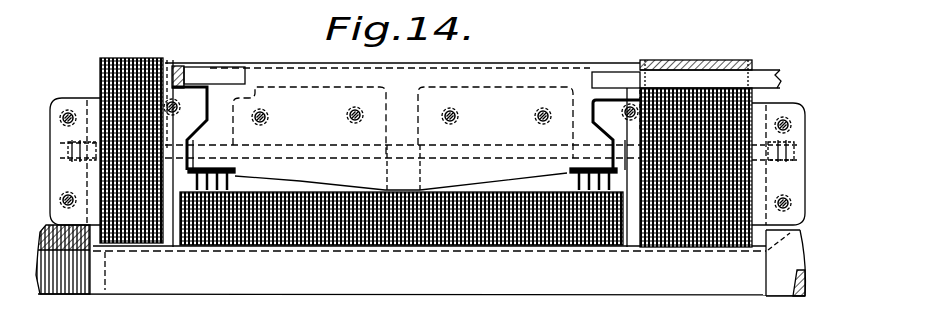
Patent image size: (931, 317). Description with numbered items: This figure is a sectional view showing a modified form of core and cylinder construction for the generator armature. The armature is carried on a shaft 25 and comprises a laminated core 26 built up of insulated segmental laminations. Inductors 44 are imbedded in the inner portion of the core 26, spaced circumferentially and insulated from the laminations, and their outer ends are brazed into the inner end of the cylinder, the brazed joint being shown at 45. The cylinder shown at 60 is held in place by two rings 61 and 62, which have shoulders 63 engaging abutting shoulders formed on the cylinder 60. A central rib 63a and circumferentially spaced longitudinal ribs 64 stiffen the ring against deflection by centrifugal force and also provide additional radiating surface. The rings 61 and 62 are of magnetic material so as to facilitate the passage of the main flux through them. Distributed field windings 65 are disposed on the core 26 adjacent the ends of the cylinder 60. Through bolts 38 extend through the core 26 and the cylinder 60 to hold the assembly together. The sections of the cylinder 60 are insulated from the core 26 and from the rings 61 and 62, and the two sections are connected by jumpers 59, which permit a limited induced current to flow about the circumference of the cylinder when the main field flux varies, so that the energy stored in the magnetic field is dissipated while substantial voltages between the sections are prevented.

The shaft 25 is at (432, 285).
The laminated core 26 is at (427, 243).
The through bolts 38 is at (496, 140).
The inductors 44 is at (766, 78).
The brazed joint 45 is at (606, 78).
The jumpers 59 is at (197, 76).
The cylinder 60 is at (503, 72).
The ring 61 is at (175, 228).
The ring 62 is at (638, 233).
The shoulders 63 is at (193, 120).
The central rib 63a is at (383, 132).
The longitudinal ribs 64 is at (323, 183).
The distributed field windings 65 is at (230, 183).